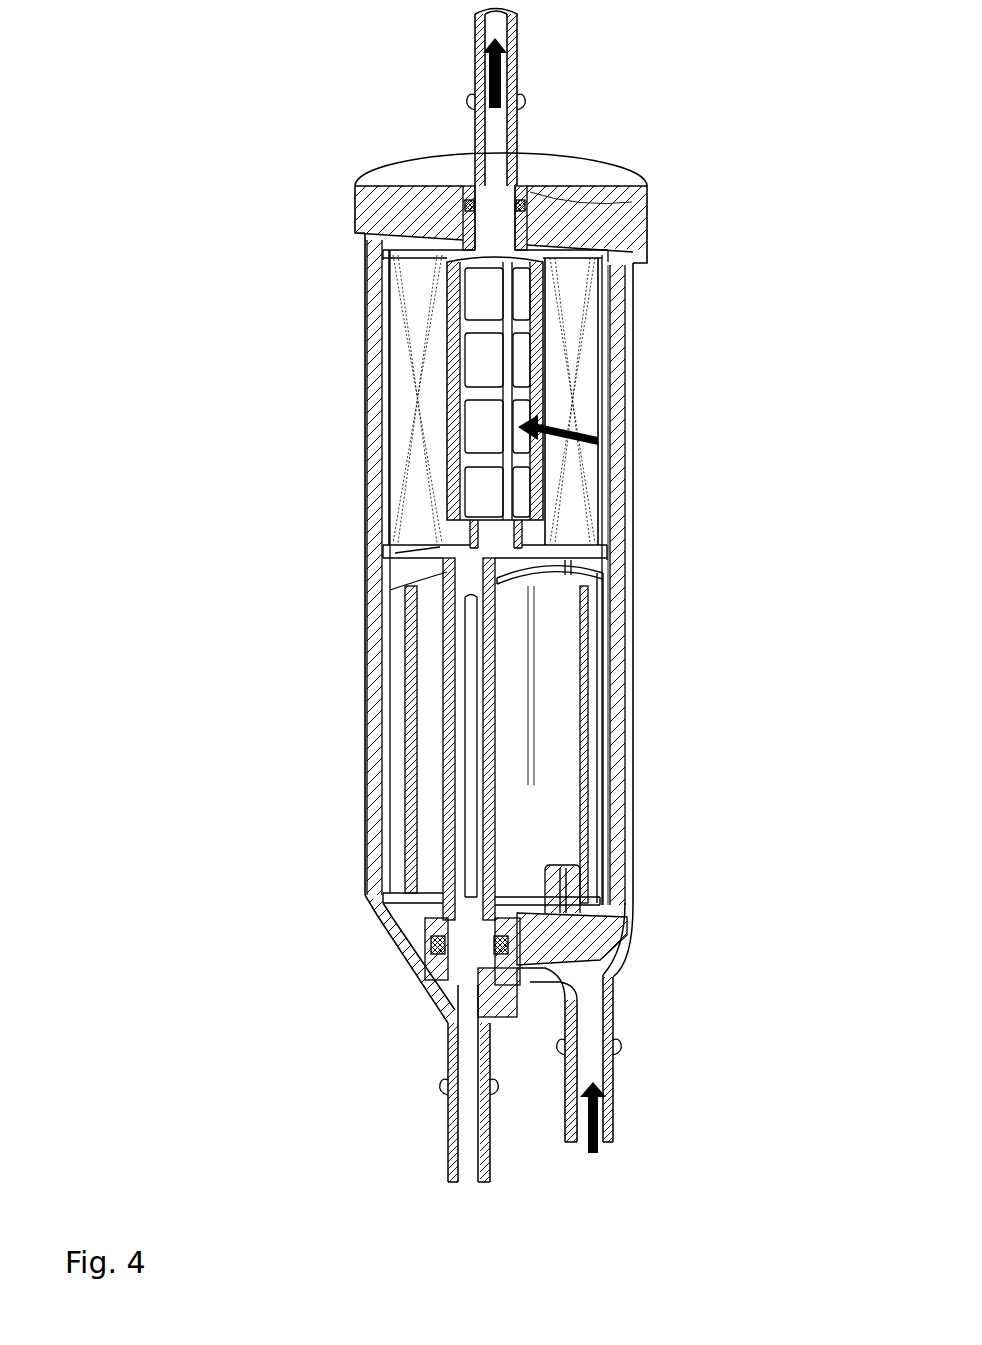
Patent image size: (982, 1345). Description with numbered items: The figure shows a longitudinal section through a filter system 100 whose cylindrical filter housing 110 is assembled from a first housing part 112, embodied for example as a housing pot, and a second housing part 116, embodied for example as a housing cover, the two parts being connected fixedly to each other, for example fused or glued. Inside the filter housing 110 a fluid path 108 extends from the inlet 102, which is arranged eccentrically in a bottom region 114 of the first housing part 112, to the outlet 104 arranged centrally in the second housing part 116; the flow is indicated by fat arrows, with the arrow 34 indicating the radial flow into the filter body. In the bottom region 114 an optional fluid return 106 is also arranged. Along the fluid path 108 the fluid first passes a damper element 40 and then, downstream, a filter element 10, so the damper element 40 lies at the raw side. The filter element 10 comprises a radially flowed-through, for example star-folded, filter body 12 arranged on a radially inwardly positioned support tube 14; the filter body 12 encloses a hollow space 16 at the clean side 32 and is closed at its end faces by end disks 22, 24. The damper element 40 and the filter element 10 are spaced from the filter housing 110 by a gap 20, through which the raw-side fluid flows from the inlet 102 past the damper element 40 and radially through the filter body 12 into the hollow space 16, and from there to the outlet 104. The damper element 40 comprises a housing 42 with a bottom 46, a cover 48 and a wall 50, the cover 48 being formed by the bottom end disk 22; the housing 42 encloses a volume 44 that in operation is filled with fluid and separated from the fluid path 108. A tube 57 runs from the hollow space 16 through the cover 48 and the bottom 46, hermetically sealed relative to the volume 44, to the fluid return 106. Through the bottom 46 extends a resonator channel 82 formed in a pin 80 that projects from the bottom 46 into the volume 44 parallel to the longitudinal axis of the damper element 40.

The filter system 100 is at (310, 128).
The outlet 104 is at (476, 140).
The second housing part 116 is at (628, 192).
The end disk 24 is at (393, 252).
The clean side 32 is at (497, 308).
The filter body 12 is at (562, 329).
The filter element 10 is at (608, 330).
The gap 20 is at (383, 346).
The hollow space 16 is at (496, 372).
The flow direction 34 is at (596, 420).
The support tube 14 is at (403, 402).
The filter housing 110 is at (638, 546).
The bottom end disk 22 is at (420, 538).
The damper element 40 is at (612, 604).
The cover 48 is at (571, 572).
The tube 57 is at (445, 627).
The volume 44 is at (540, 683).
The housing 42 is at (603, 676).
The first housing part 112 is at (632, 724).
The resonator channel 82 is at (563, 860).
The wall 50 is at (398, 760).
The pin 80 is at (623, 830).
The fluid path 108 is at (605, 934).
The bottom region 114 is at (607, 966).
The bottom 46 is at (400, 898).
The fluid return 106 is at (485, 1128).
The inlet 102 is at (610, 1112).